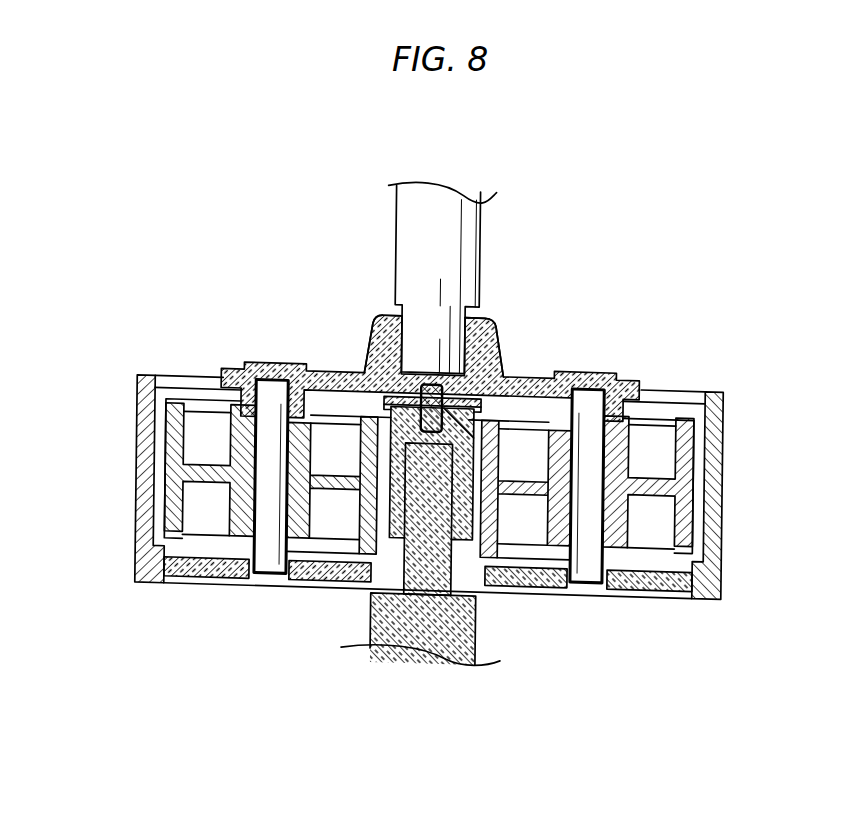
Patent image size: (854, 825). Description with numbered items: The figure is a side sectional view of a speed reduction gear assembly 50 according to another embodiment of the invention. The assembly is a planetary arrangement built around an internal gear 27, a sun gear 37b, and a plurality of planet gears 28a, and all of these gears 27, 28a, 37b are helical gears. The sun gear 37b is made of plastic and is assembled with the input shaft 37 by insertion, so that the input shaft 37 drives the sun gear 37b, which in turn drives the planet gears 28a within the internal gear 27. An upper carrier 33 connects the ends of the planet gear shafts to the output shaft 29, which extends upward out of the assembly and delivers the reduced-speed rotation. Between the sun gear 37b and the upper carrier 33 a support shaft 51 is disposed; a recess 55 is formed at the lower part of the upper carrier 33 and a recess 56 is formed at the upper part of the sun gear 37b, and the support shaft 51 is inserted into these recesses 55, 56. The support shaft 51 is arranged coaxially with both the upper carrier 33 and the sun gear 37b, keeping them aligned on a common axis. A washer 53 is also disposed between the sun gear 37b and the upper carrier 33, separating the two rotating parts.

The internal gear 27 is at (722, 421).
The planet gears 28a is at (618, 447).
The output shaft 29 is at (465, 227).
The upper carrier 33 is at (497, 341).
The input shaft 37 is at (445, 657).
The sun gear 37b is at (395, 508).
The speed reduction gear assembly 50 is at (283, 351).
The support shaft 51 is at (430, 384).
The washer 53 is at (420, 418).
The recess 55 is at (455, 405).
The recess 56 is at (453, 427).